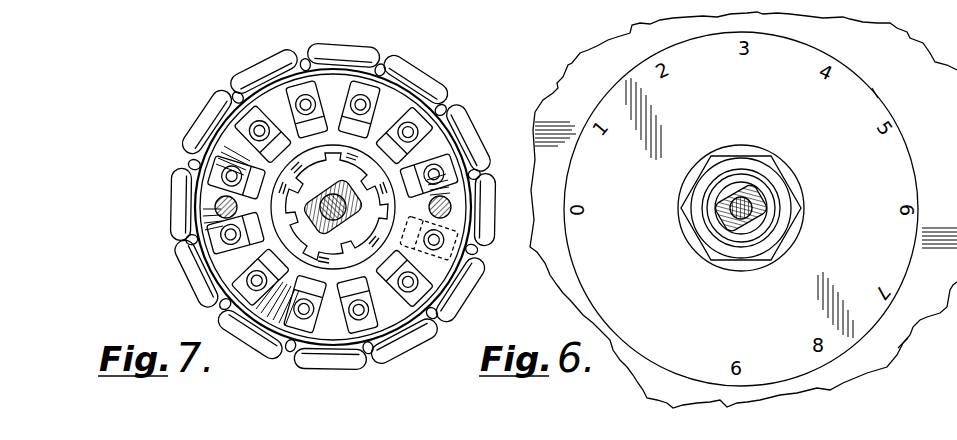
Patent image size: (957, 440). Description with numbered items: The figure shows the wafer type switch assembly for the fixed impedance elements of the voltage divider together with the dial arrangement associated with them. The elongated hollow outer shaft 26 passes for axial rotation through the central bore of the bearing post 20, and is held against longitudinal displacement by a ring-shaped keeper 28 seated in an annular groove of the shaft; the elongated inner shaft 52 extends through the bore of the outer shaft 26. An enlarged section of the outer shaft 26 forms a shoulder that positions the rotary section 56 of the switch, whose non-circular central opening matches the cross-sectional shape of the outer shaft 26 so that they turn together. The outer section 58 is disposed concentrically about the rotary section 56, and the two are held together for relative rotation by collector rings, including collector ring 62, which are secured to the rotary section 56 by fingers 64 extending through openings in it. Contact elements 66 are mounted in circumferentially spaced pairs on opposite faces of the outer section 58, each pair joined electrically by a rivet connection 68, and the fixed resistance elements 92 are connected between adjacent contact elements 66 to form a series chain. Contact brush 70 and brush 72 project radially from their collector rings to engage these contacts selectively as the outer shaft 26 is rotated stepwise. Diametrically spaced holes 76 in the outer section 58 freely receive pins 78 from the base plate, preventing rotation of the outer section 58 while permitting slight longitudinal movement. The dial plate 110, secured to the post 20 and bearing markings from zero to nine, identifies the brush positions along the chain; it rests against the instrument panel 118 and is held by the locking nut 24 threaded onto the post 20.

In FIG. 7, the outer section 58 is at (283, 70).
In FIG. 7, the fixed resistance elements 92 is at (431, 87).
In FIG. 7, the holes 76 is at (186, 191).
In FIG. 7, the pins 78 is at (214, 204).
In FIG. 7, the collector ring 62 is at (333, 146).
In FIG. 7, the fingers 64 is at (365, 168).
In FIG. 7, the contact elements 66 is at (307, 127).
In FIG. 7, the rotary section 56 is at (277, 162).
In FIG. 7, the rivet connection 68 is at (430, 166).
In FIG. 7, the brush 72 is at (402, 248).
In FIG. 7, the contact brush 70 is at (307, 300).
In FIG. 7, the inner shaft 52 is at (327, 214).
In FIG. 6, the inner shaft 52 is at (722, 221).
In FIG. 7, the outer shaft 26 is at (328, 188).
In FIG. 6, the outer shaft 26 is at (735, 184).
In FIG. 6, the locking nut 24 is at (762, 197).
In FIG. 6, the bearing post 20 is at (772, 232).
In FIG. 6, the ring-shaped keeper 28 is at (733, 252).
In FIG. 6, the dial plate 110 is at (868, 93).
In FIG. 6, the instrument panel 118 is at (900, 340).